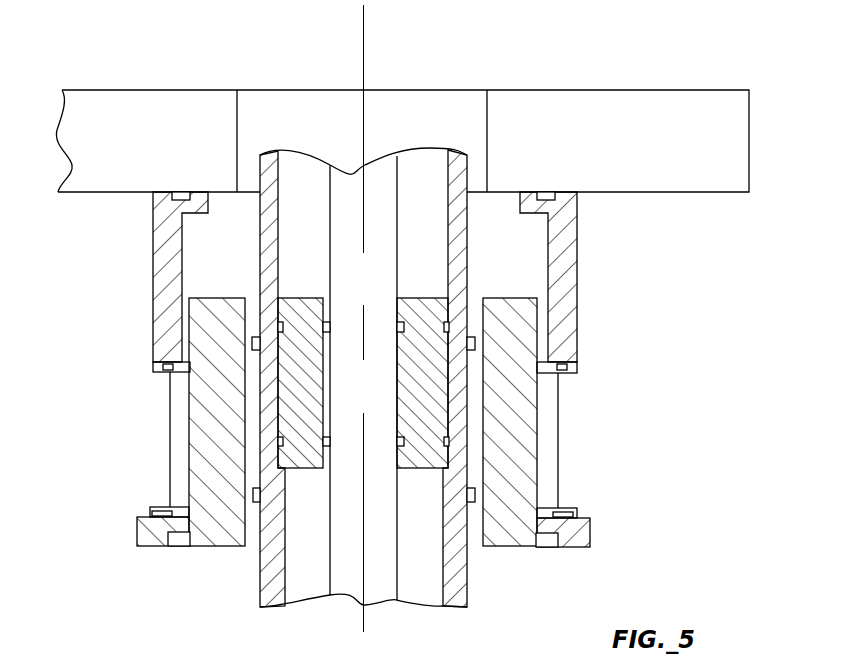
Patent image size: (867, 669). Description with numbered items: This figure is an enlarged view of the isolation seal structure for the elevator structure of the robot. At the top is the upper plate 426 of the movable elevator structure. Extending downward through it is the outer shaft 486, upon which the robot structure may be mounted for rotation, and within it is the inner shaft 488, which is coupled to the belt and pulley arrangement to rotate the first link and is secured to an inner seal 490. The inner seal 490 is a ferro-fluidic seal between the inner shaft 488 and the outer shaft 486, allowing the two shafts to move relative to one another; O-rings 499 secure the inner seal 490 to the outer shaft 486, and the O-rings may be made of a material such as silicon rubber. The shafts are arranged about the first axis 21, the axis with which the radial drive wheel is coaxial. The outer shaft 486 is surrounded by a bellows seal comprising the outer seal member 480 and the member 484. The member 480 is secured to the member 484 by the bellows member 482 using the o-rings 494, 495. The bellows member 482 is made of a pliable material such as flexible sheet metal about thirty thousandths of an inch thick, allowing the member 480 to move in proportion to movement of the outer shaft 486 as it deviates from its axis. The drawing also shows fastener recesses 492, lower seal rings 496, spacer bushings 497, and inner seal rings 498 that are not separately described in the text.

The first axis 21 is at (363, 45).
The upper plate 426 is at (566, 92).
The outer seal member 480 is at (577, 547).
The bellows member 482 is at (560, 408).
The member 484 is at (573, 298).
The outer shaft 486 is at (463, 562).
The inner shaft 488 is at (381, 400).
The inner seal 490 is at (292, 387).
The fastener recess 492 is at (182, 192).
The o-ring 494 is at (153, 367).
The o-ring 495 is at (150, 507).
The seal ring 496 is at (253, 503).
The spacer bushing 497 is at (257, 336).
The seal ring 498 is at (278, 441).
The O-rings 499 is at (262, 328).